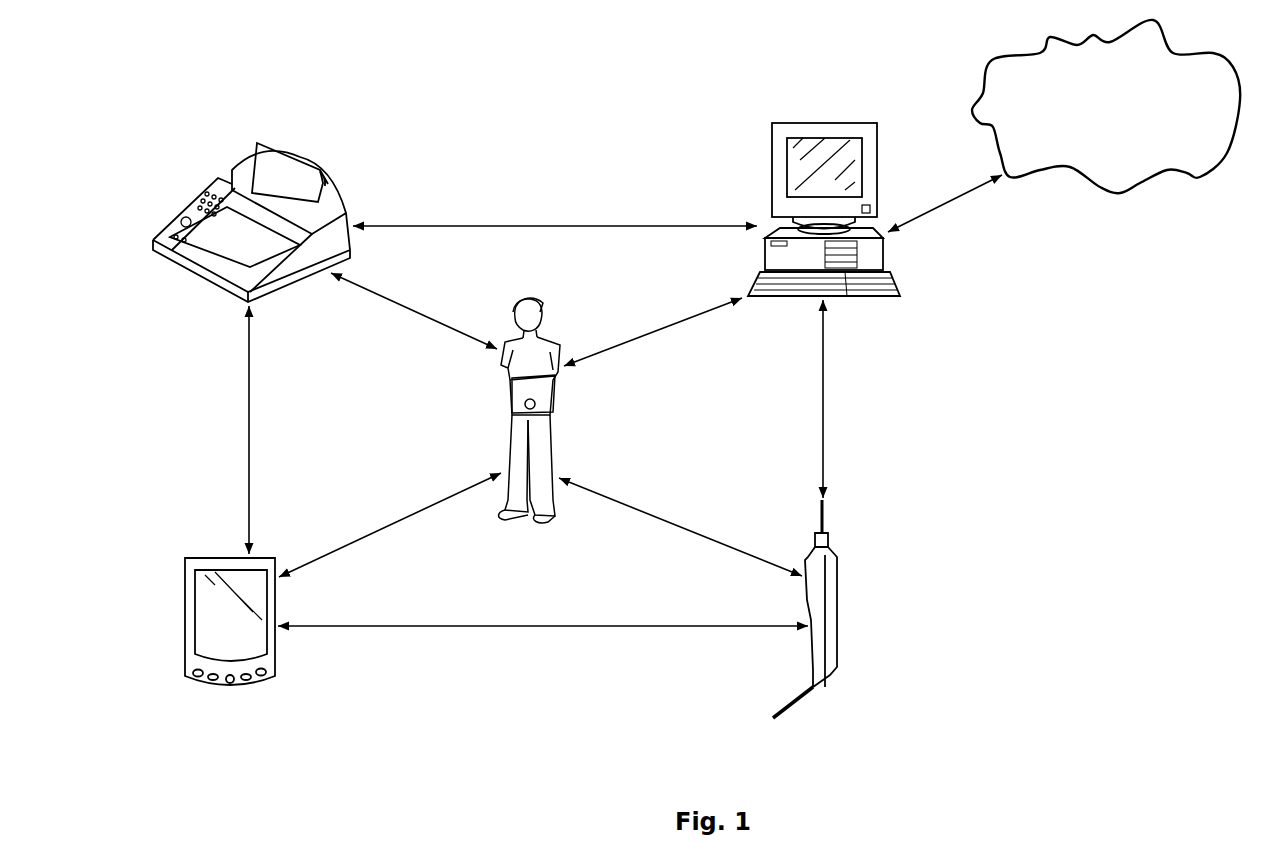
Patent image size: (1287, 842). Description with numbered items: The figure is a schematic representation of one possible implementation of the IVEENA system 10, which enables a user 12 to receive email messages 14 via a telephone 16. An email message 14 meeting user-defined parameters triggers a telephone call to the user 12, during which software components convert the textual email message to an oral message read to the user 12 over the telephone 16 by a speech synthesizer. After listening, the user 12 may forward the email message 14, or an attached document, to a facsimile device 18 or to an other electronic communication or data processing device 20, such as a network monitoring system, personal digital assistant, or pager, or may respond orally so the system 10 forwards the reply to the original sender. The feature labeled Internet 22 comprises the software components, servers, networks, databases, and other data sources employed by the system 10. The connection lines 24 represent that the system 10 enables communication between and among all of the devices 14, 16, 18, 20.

The IVEENA system 10 is at (535, 152).
The user 12 is at (490, 395).
The email message 14 is at (770, 181).
The telephone 16 is at (843, 632).
The facsimile device 18 is at (199, 184).
The other electronic communication or data processing device 20 is at (283, 662).
The Internet 22 is at (1130, 178).
The connection lines 24 is at (672, 327).